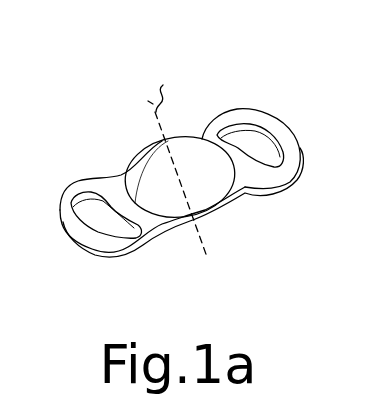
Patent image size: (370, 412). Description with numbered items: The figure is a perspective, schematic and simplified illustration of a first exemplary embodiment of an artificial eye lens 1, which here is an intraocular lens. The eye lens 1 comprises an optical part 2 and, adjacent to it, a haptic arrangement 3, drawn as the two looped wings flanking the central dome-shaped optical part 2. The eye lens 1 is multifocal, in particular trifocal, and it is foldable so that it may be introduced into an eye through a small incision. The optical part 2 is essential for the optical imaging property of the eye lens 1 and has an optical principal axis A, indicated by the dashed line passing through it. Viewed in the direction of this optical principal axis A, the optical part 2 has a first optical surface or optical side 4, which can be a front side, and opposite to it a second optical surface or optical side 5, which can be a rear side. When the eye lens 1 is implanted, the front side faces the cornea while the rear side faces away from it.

The artificial eye lens 1 is at (172, 169).
The optical part 2 is at (206, 192).
The haptic arrangement 3 is at (64, 163).
The first optical surface 4 is at (231, 178).
The second optical surface 5 is at (181, 256).